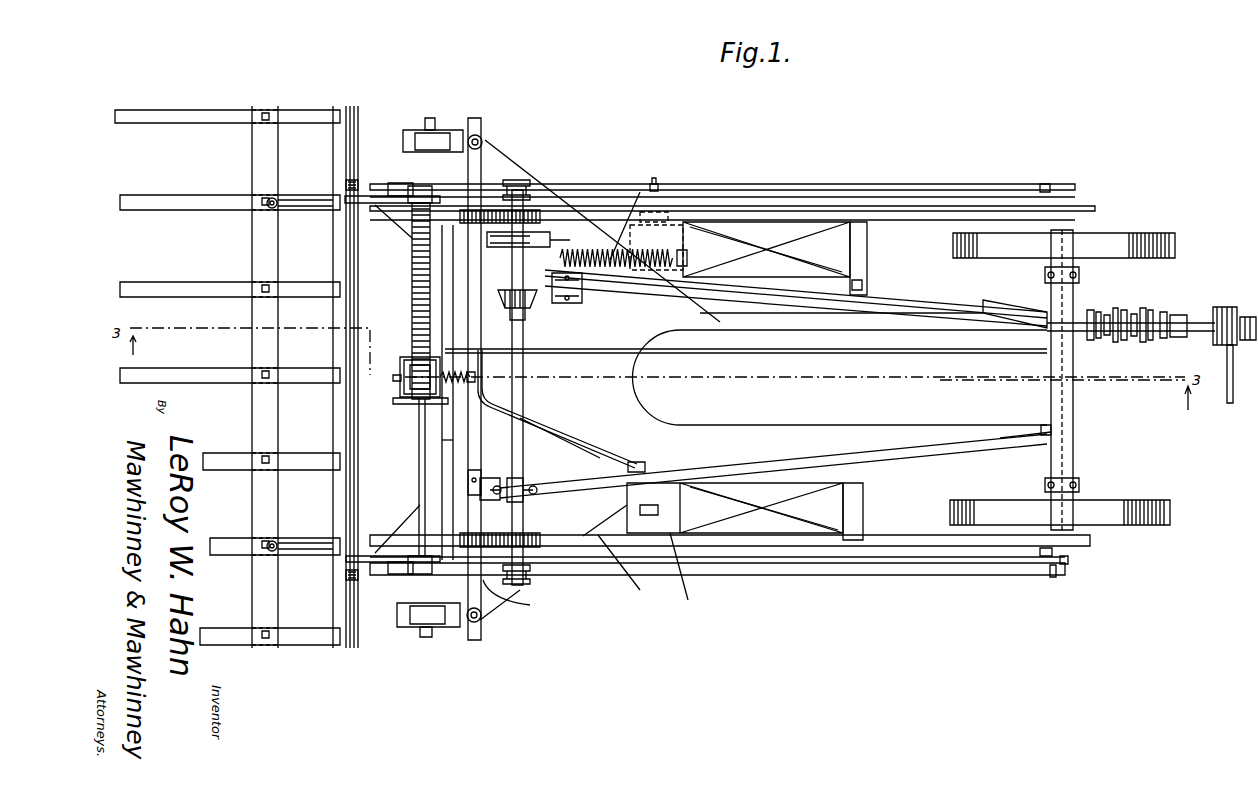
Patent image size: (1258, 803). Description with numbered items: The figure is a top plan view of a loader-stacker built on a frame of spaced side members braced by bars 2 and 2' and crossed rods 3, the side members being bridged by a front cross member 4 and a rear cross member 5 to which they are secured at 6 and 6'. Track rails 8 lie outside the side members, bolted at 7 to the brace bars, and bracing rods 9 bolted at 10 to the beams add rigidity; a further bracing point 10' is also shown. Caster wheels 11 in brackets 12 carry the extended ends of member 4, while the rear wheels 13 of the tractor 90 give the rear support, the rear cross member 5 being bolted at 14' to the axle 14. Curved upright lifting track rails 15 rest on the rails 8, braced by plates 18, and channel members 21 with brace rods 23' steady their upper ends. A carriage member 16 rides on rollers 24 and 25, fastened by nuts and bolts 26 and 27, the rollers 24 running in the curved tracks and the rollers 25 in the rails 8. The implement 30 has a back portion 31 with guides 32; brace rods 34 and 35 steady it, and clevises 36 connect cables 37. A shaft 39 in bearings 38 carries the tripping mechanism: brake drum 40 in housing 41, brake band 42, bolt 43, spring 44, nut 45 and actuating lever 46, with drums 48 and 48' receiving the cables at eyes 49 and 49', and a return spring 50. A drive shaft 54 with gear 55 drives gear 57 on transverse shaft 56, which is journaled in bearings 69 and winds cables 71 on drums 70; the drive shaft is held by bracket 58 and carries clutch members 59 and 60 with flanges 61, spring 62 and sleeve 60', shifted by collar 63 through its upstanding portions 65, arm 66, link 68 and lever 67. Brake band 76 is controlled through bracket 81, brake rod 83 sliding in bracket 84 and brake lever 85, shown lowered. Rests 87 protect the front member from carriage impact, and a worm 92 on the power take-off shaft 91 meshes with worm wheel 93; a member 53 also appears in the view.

The brace bar 2 is at (738, 352).
The brace bar 2' is at (869, 381).
The crossed rods 3 is at (818, 240).
The front cross member 4 is at (472, 642).
The rear cross member 5 is at (1080, 430).
The securing point 6 is at (484, 476).
The securing point 6' is at (1027, 415).
The bolted connection 7 is at (683, 586).
The track rail 8 is at (845, 205).
The bracing rod 9 is at (556, 425).
The bolted connection 10 is at (638, 450).
The bracket 10' is at (419, 440).
The caster wheel 11 is at (428, 118).
The bracket 12 is at (446, 130).
The rear wheel 13 is at (1170, 240).
The axle 14 is at (1109, 361).
The bolted connection 14' is at (1090, 484).
The lifting track rail 15 is at (628, 192).
The carriage member 16 is at (876, 197).
The plate 18 is at (608, 518).
The channel member 21 is at (505, 500).
The brace rod 23' is at (526, 387).
The roller 24 is at (668, 212).
The roller 25 is at (1043, 184).
The nut and bolt 26 is at (1062, 564).
The nut and bolt 27 is at (1052, 578).
The rake or implement 30 is at (178, 198).
The back portion 31 is at (335, 240).
The complemental guide 32 is at (343, 203).
The brace rod 34 is at (500, 158).
The bracing rod 35 is at (298, 198).
The clevis 36 is at (358, 180).
The cable 37 is at (394, 565).
The bearing 38 is at (396, 183).
The rotatable shaft 39 is at (440, 460).
The friction brake drum 40 is at (400, 385).
The U-shaped housing 41 is at (400, 400).
The brake band 42 is at (400, 372).
The threaded bolt 43 is at (468, 380).
The spring 44 is at (510, 396).
The nut 45 is at (482, 370).
The actuating lever 46 is at (458, 350).
The drum 48 is at (432, 577).
The drum 48' is at (429, 178).
The eye attachment 49 is at (397, 527).
The eye attachment 49' is at (392, 226).
The spring 50 is at (410, 266).
The diagonal bar 53 is at (850, 312).
The drive shaft 54 is at (898, 315).
The gear 55 is at (584, 300).
The transverse shaft 56 is at (520, 433).
The gear 57 is at (556, 318).
The upstanding bracket 58 is at (1040, 330).
The clutch member 59 is at (1116, 308).
The shiftable clutch member 60 is at (500, 359).
The sleeve portion 60' is at (1189, 284).
The flange 61 is at (1146, 308).
The spring 62 is at (1125, 310).
The split shiftable collar 63 is at (1182, 337).
The upstanding portion 65 is at (1165, 312).
The rigid arm 66 is at (640, 215).
The lever 67 is at (1090, 340).
The link 68 is at (1100, 338).
The bearing 69 is at (528, 484).
The drum 70 is at (520, 180).
The cable 71 is at (800, 185).
The brake band 76 is at (552, 239).
The bracket 81 is at (512, 301).
The brake rod 83 is at (905, 305).
The bracket 84 is at (866, 286).
The brake lever 85 is at (1107, 315).
The rest 87 is at (505, 600).
The tractor 90 is at (641, 390).
The power take-off shaft 91 is at (1230, 405).
The worm 92 is at (1232, 307).
The worm wheel 93 is at (1247, 317).